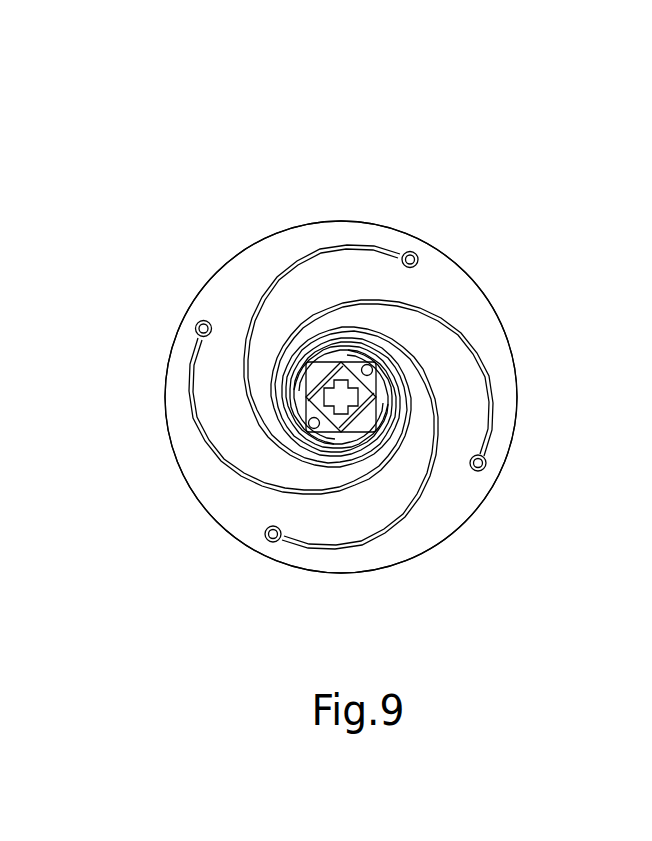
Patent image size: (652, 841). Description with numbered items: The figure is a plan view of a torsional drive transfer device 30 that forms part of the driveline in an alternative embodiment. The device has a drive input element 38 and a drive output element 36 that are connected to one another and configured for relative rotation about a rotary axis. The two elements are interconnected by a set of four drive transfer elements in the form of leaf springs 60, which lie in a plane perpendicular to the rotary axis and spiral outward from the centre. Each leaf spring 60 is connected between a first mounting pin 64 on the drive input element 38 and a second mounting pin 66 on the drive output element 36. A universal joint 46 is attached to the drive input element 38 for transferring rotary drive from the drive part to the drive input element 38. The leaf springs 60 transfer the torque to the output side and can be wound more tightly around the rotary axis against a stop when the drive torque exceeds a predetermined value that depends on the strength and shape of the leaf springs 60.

The torsional drive transfer device 30 is at (460, 185).
The drive output element 36 is at (443, 507).
The leaf spring 60 is at (326, 255).
The second mounting pin 66 is at (418, 258).
The universal joint 46 is at (318, 362).
The first mounting pin 64 is at (373, 367).
The drive input element 38 is at (378, 389).